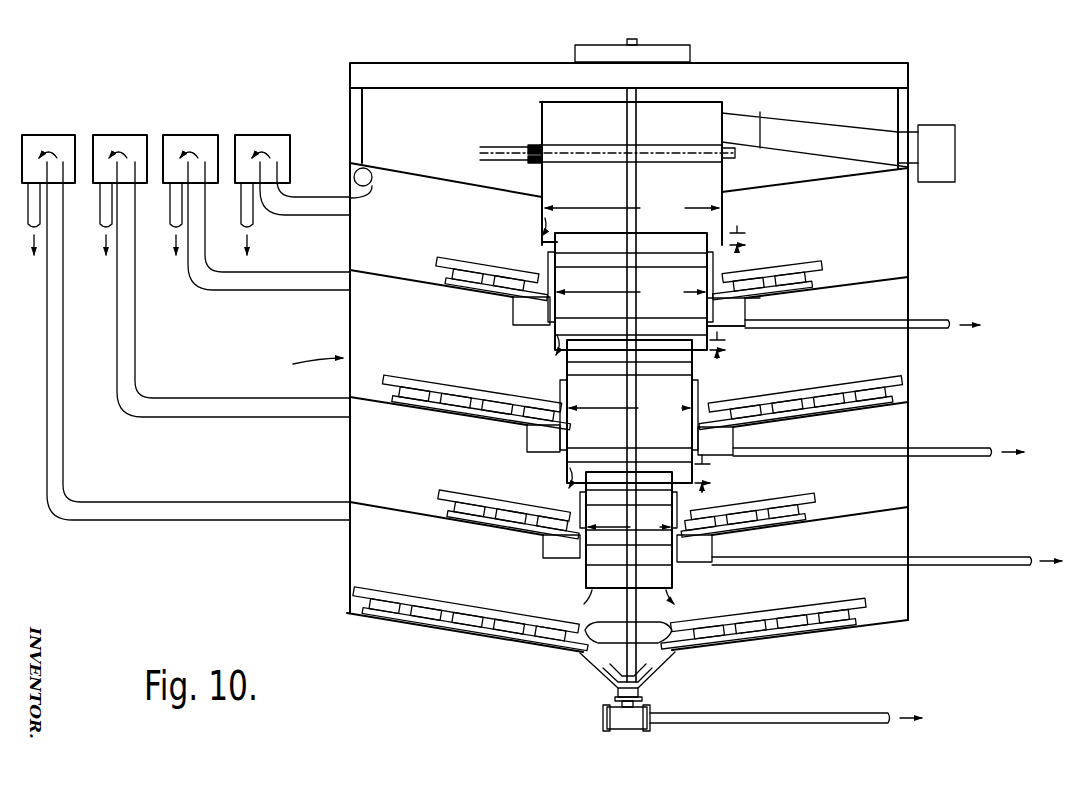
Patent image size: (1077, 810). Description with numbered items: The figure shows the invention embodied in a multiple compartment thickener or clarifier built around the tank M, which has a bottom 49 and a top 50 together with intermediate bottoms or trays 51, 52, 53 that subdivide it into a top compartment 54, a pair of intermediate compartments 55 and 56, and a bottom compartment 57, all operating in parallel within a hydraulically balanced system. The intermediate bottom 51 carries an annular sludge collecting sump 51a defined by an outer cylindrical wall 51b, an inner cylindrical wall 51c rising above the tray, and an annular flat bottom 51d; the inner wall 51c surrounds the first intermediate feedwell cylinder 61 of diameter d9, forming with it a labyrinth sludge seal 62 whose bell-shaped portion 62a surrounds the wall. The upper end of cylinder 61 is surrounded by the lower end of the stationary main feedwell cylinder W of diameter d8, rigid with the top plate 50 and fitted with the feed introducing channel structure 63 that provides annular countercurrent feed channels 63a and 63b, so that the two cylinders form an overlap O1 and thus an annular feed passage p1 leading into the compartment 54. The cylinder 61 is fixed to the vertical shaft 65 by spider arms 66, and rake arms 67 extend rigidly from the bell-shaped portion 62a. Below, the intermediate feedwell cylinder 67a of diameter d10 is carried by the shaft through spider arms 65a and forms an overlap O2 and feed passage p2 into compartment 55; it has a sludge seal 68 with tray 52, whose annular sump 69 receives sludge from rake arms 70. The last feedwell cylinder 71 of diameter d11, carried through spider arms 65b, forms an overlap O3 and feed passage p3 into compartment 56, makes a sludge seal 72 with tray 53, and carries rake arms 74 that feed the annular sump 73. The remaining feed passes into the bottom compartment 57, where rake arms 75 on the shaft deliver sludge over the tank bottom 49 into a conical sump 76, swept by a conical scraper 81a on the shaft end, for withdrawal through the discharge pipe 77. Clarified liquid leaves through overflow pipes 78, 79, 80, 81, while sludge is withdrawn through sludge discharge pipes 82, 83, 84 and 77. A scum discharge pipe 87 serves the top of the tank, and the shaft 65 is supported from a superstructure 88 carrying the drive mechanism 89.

The tank bottom 49 is at (877, 629).
The top plate 50 is at (784, 185).
The intermediate bottom 51 is at (845, 281).
The annular sludge collecting sump 51a is at (512, 312).
The outer cylindrical wall 51b is at (748, 306).
The inner cylindrical wall 51c is at (726, 313).
The annular flat bottom 51d is at (735, 328).
The tray 52 is at (855, 392).
The tray 53 is at (848, 509).
The top compartment 54 is at (874, 222).
The intermediate compartment 55 is at (861, 339).
The intermediate compartment 56 is at (858, 454).
The bottom compartment 57 is at (880, 563).
The first intermediate feedwell cylinder 61 is at (558, 240).
The labyrinth sludge seal 62 is at (559, 290).
The bell-shaped portion 62a is at (548, 263).
The feed introducing channel structure 63 is at (737, 153).
The annular countercurrent feed channel 63a is at (536, 144).
The annular countercurrent feed channel 63b is at (536, 164).
The vertical shaft 65 is at (626, 196).
The spider arms 65a is at (596, 383).
The spider arms 65b is at (608, 526).
The spider arms 66 is at (646, 260).
The rake arms 67 is at (790, 267).
The intermediate feedwell cylinder 67a is at (571, 361).
The sludge seal 68 is at (699, 403).
The annular sludge collecting sump 69 is at (735, 441).
The rake arms 70 is at (778, 398).
The last feedwell cylinder 71 is at (590, 488).
The sludge seal 72 is at (578, 506).
The annular sludge collecting sump 73 is at (715, 546).
The rake arms 74 is at (755, 503).
The rake arms 75 is at (756, 614).
The conical sump 76 is at (650, 664).
The discharge pipe 77 is at (790, 713).
The overflow pipe 78 is at (306, 218).
The overflow pipe 79 is at (285, 293).
The overflow pipe 80 is at (265, 419).
The overflow pipe 81 is at (243, 523).
The conical scraper 81a is at (600, 666).
The sludge discharge pipe 82 is at (932, 320).
The sludge discharge pipe 83 is at (940, 448).
The sludge discharge pipe 84 is at (962, 557).
The scum discharge pipe 87 is at (822, 132).
The superstructure 88 is at (766, 63).
The drive mechanism 89 is at (668, 47).
The diameter of main feedwell cylinder d8 is at (632, 208).
The diameter of first intermediate feedwell cylinder d9 is at (631, 292).
The diameter of intermediate feedwell cylinder d10 is at (629, 408).
The diameter of last feedwell cylinder d11 is at (629, 526).
The stationary main feedwell cylinder W is at (724, 217).
The overlap O1 is at (742, 240).
The overlap O2 is at (720, 354).
The overlap O3 is at (711, 475).
The annular feed passage p1 is at (543, 222).
The annular feed passage p2 is at (554, 352).
The annular feed passage p3 is at (567, 472).
The tank M is at (306, 365).